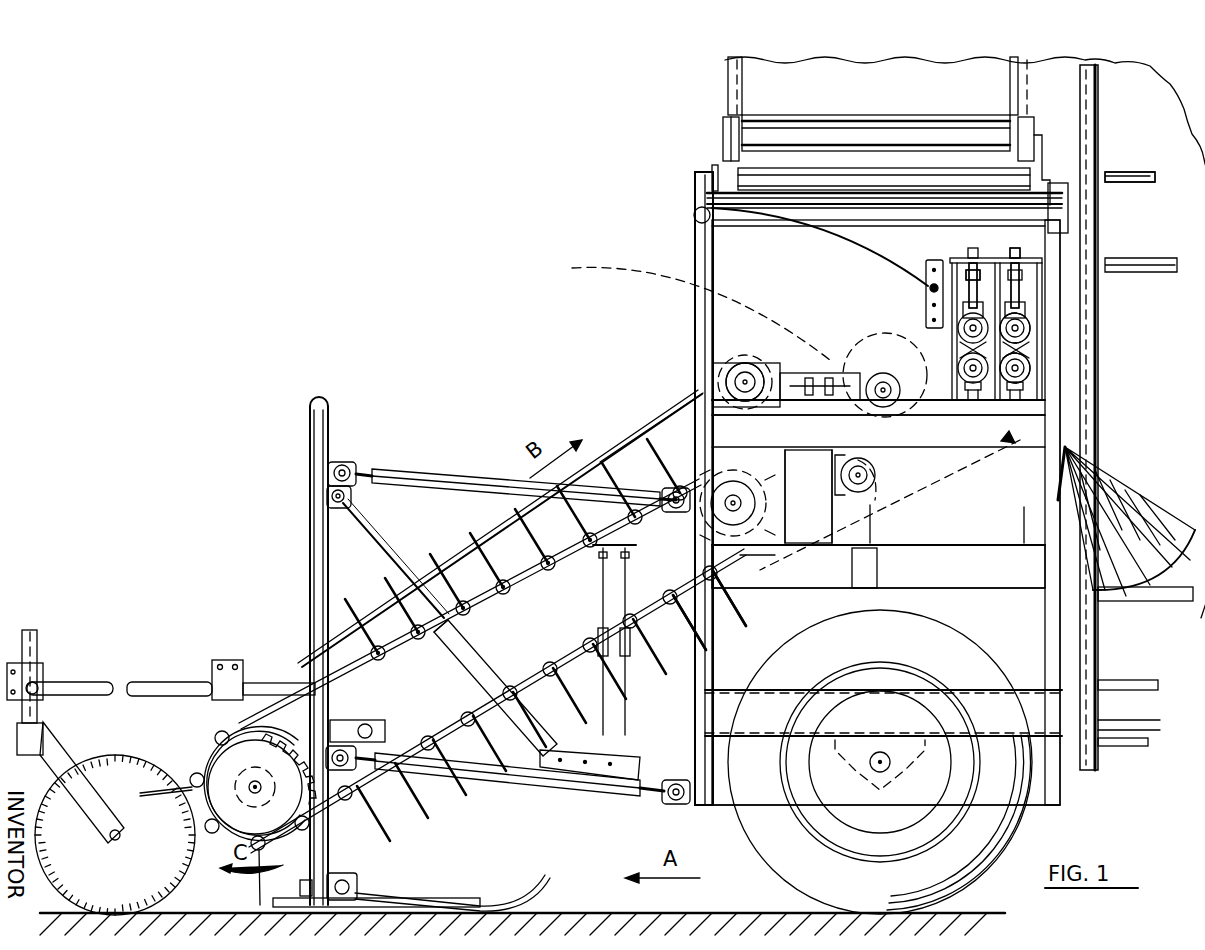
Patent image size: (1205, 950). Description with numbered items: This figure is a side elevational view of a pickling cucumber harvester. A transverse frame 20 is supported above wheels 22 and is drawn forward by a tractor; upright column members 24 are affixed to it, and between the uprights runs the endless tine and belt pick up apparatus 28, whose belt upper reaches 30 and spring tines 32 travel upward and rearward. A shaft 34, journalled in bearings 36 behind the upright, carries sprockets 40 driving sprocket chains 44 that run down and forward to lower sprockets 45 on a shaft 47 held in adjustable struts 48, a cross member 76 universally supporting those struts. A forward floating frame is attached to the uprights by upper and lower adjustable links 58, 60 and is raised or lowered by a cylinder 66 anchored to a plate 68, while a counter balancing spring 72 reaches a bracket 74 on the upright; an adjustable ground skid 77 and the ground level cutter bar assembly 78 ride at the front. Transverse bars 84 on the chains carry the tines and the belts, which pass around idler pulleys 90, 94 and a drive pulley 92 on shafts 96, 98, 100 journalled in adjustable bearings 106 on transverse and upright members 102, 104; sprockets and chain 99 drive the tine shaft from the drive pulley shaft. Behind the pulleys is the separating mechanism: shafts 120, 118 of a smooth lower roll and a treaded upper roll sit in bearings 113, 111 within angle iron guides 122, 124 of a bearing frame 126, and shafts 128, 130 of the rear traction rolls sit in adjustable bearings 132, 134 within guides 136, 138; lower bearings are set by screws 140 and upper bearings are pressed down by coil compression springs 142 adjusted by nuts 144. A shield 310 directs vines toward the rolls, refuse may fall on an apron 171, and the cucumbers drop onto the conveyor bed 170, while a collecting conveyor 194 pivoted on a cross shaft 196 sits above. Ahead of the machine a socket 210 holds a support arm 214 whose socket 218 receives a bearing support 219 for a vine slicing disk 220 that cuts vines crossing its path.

The transverse frame 20 is at (955, 431).
The wheel 22 is at (1033, 793).
The upright column member 24 is at (692, 243).
The tine and belt pick up apparatus 28 is at (257, 680).
The belt upper reach 30 is at (630, 448).
The spring tine 32 is at (690, 420).
The shaft 34 is at (778, 578).
The bearing 36 is at (740, 598).
The sprocket 40 is at (760, 520).
The sprocket chain 44 is at (560, 563).
The lower sprocket 45 is at (238, 772).
The shaft 47 is at (265, 790).
The adjustable strut 48 is at (455, 690).
The upper adjustable link 58 is at (443, 482).
The lower adjustable link 60 is at (555, 790).
The cylinder 66 is at (512, 690).
The plate 68 is at (612, 797).
The counter balancing spring 72 is at (626, 705).
The bracket 74 is at (712, 618).
The cross member 76 is at (360, 728).
The adjustable ground skid 77 is at (520, 904).
The cutter bar assembly 78 is at (296, 903).
The transverse bar 84 is at (482, 760).
The idler pulley 90 is at (745, 364).
The drive pulley 92 is at (892, 372).
The idler pulley 94 is at (872, 482).
The shaft 96 is at (740, 378).
The drive pulley shaft 98 is at (900, 372).
The sprockets and chain 99 is at (678, 305).
The shaft 100 is at (872, 490).
The transverse member 102 is at (845, 437).
The upright member 104 is at (822, 486).
The adjustable bearing 106 is at (835, 372).
The upper bearing 111 is at (978, 330).
The lower bearing 113 is at (896, 491).
The shaft 118 is at (926, 308).
The shaft 120 is at (1022, 392).
The angle iron guide 122 is at (985, 302).
The angle iron guide 124 is at (1008, 325).
The bearing frame 126 is at (1105, 176).
The shaft 128 is at (1031, 328).
The shaft 130 is at (1031, 370).
The upper adjustable bearing 132 is at (1031, 318).
The lower adjustable bearing 134 is at (1031, 362).
The angle iron guide 136 is at (1040, 292).
The angle iron guide 138 is at (1025, 320).
The screw 140 is at (878, 425).
The coil compression spring 142 is at (1015, 260).
The nut 144 is at (1045, 240).
The conveyor bed 170 is at (950, 560).
The apron 171 is at (1075, 455).
The conveyor 194 is at (765, 120).
The cross shaft 196 is at (758, 172).
The socket 210 is at (240, 690).
The support arm 214 is at (168, 688).
The socket 218 is at (40, 685).
The bearing support 219 is at (65, 765).
The vine slicing disk 220 is at (132, 770).
The shield 310 is at (720, 200).